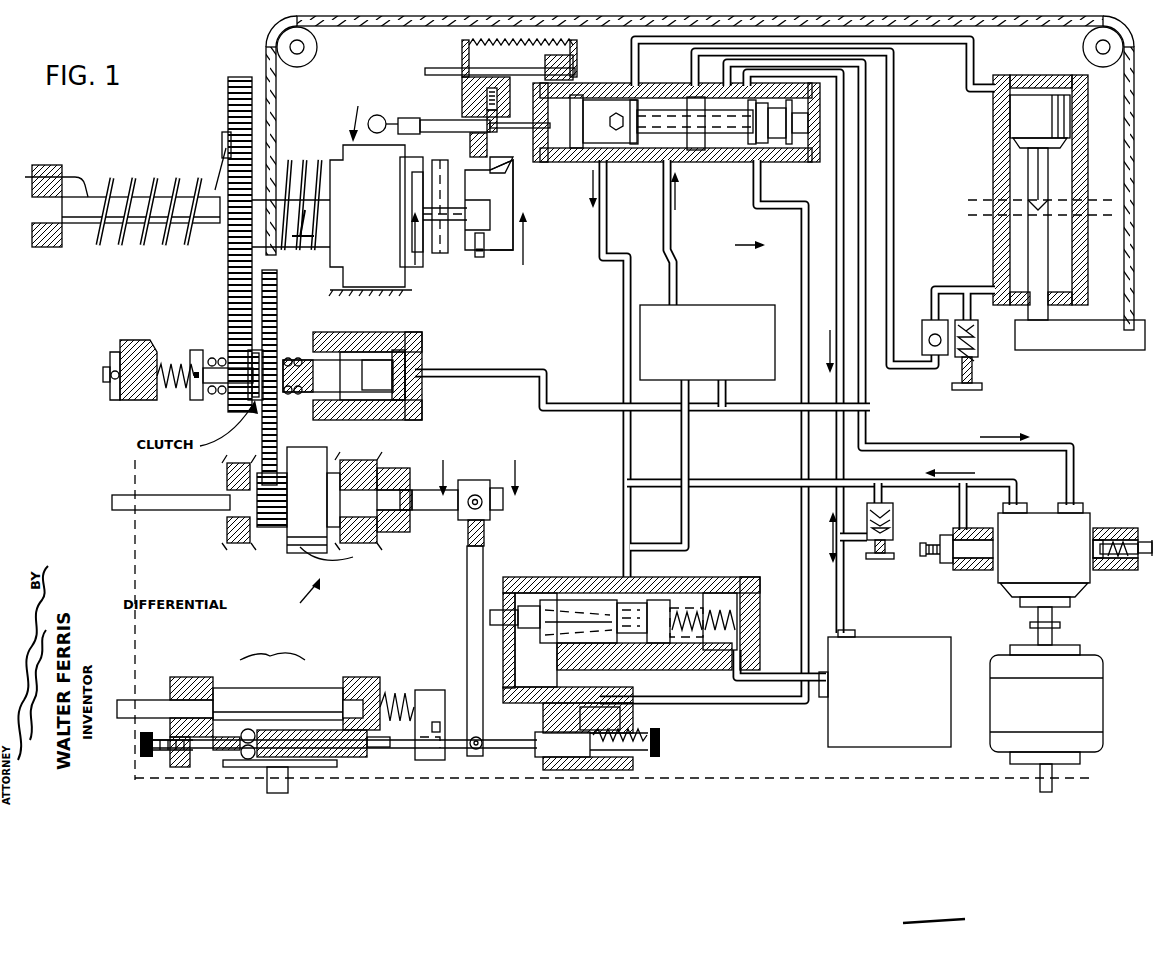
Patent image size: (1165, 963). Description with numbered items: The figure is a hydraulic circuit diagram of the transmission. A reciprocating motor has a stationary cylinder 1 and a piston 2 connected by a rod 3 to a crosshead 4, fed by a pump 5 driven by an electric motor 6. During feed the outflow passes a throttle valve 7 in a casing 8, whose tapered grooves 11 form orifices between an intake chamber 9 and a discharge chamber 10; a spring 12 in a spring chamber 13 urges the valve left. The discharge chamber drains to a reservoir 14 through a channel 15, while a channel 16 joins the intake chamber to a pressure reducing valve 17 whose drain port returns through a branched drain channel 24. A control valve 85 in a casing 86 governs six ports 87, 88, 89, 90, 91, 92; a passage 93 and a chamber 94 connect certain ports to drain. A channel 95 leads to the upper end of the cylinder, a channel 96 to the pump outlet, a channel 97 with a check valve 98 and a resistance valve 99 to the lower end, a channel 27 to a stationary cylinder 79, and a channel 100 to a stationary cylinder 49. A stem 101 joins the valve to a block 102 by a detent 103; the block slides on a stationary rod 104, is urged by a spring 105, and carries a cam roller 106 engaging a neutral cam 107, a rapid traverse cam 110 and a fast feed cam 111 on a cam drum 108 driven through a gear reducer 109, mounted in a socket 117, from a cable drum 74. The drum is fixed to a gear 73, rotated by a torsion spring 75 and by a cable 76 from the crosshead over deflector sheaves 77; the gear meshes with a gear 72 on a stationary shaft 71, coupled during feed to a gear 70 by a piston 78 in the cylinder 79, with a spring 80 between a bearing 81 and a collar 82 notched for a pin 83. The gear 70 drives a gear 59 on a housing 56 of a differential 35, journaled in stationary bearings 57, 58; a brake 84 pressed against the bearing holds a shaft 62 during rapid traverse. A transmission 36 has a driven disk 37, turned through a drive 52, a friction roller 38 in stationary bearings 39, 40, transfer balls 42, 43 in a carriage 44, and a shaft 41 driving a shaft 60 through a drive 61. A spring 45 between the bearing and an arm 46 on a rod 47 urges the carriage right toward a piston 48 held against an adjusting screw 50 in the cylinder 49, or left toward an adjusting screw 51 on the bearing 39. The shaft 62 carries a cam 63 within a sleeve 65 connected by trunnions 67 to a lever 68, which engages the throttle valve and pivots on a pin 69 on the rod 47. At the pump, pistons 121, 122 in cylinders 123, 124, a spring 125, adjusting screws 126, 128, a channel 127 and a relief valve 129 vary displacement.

The stationary cylinder 1 is at (993, 152).
The piston 2 is at (1040, 121).
The rod 3 is at (1038, 234).
The crosshead 4 is at (1080, 335).
The pump 5 is at (1044, 574).
The electric motor 6 is at (1046, 718).
The throttle valve 7 is at (548, 635).
The casing 8 is at (575, 595).
The intake chamber 9 is at (652, 565).
The discharge chamber 10 is at (546, 574).
The tapered grooves 11 is at (632, 618).
The spring 12 is at (745, 610).
The spring chamber 13 is at (718, 593).
The reservoir 14 is at (885, 688).
The channel 15 is at (791, 676).
The channel 16 is at (668, 533).
The pressure reducing valve 17 is at (722, 307).
The branched drain channel 24 is at (760, 270).
The channel 27 is at (512, 370).
The differential 35 is at (335, 579).
The transmission 36 is at (272, 648).
The driven disk 37 is at (222, 760).
The cylindrical friction roller 38 is at (268, 687).
The stationary bearing 39 is at (197, 680).
The stationary bearing 40 is at (350, 680).
The shaft 41 is at (155, 700).
The transfer ball 42 is at (246, 728).
The transfer ball 43 is at (245, 760).
The carriage 44 is at (302, 730).
The spring 45 is at (384, 704).
The arm 46 is at (425, 700).
The rod 47 is at (403, 748).
The piston 48 is at (540, 740).
The stationary cylinder 49 is at (648, 726).
The adjusting screw 50 is at (662, 748).
The adjusting screw 51 is at (148, 757).
The drive 52 is at (804, 777).
The housing 56 is at (313, 500).
The stationary bearing 57 is at (366, 470).
The stationary bearing 58 is at (232, 523).
The gear 59 is at (275, 527).
The shaft 60 is at (192, 494).
The drive 61 is at (133, 550).
The shaft 62 is at (410, 511).
The cam 63 is at (430, 494).
The sleeve 65 is at (483, 512).
The trunnions 67 is at (478, 495).
The lever 68 is at (467, 565).
The pin 69 is at (480, 749).
The gear 70 is at (277, 320).
The stationary shaft 71 is at (140, 382).
The gear 72 is at (250, 400).
The gear 73 is at (228, 277).
The cable drum 74 is at (296, 165).
The torsion spring 75 is at (138, 188).
The cable 76 is at (272, 42).
The deflector sheaves 77 is at (306, 47).
The piston 78 is at (412, 352).
The stationary cylinder 79 is at (400, 398).
The spring 80 is at (168, 361).
The bearing 81 is at (143, 346).
The collar 82 is at (197, 392).
The pin 83 is at (197, 370).
The brake 84 is at (391, 467).
The control valve 85 is at (586, 150).
The casing 86 is at (816, 160).
The port 87 is at (616, 84).
The port 88 is at (625, 160).
The port 89 is at (672, 70).
The port 90 is at (682, 160).
The port 91 is at (748, 160).
The port 92 is at (770, 162).
The passage 93 is at (795, 118).
The chamber 94 is at (800, 135).
The channel 95 is at (950, 44).
The channel 96 is at (671, 230).
The channel 97 is at (895, 181).
The check valve 98 is at (926, 328).
The resistance valve 99 is at (978, 348).
The channel 100 is at (805, 210).
The stem 101 is at (412, 120).
The block 102 is at (486, 93).
The detent 103 is at (486, 112).
The stationary rod 104 is at (441, 68).
The spring 105 is at (577, 44).
The cam roller 106 is at (473, 156).
The neutral cam 107 is at (507, 164).
The cam drum 108 is at (500, 196).
The gear reducer 109 is at (370, 184).
The rapid traverse cam 110 is at (470, 240).
The fast feed cam 111 is at (480, 257).
The socket 117 is at (438, 255).
The piston 121 is at (1104, 528).
The piston 122 is at (970, 570).
The cylinder 123 is at (1096, 572).
The cylinder 124 is at (952, 566).
The spring 125 is at (1118, 570).
The adjusting screw 126 is at (919, 552).
The channel 127 is at (963, 500).
The adjusting screw 128 is at (1145, 540).
The relief valve 129 is at (890, 520).